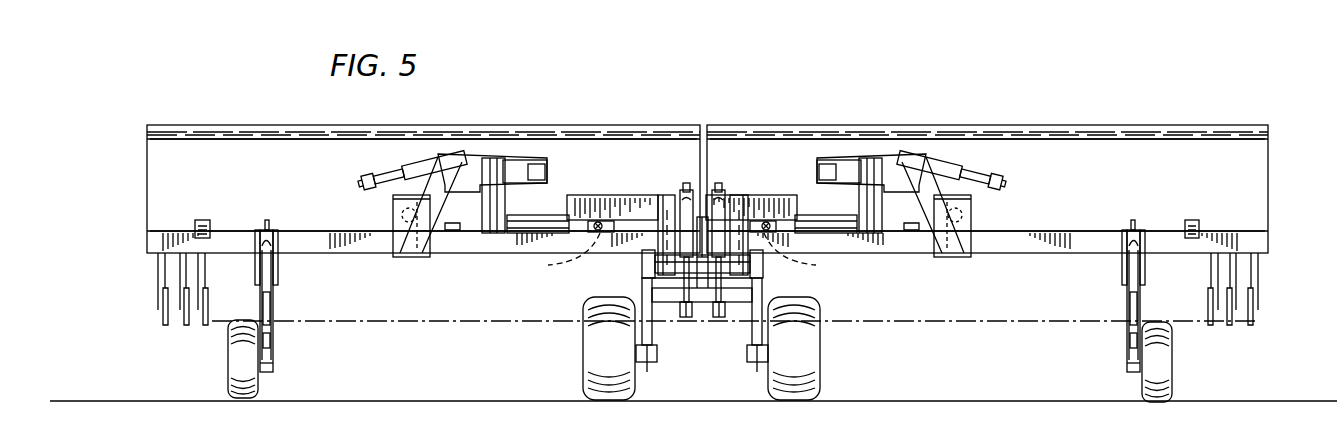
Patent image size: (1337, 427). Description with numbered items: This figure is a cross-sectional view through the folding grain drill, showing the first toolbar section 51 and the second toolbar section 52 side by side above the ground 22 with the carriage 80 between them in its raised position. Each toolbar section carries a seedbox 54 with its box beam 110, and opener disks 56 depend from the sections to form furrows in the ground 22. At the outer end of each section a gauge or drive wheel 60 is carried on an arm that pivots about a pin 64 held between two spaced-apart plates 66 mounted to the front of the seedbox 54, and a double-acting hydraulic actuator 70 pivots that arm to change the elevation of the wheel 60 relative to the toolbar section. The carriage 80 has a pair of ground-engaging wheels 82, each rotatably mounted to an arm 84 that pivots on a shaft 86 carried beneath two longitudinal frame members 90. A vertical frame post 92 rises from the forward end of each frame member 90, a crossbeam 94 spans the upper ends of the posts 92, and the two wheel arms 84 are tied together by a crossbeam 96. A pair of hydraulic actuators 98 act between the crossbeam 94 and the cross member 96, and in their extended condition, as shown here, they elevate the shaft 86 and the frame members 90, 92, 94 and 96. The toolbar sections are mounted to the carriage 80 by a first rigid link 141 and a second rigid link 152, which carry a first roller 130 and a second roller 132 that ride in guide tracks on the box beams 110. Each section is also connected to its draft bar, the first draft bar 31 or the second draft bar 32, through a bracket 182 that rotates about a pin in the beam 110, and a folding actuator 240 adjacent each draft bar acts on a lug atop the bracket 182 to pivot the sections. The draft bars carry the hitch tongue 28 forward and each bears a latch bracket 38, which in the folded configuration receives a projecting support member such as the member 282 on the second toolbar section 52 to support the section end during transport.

The ground 22 is at (1220, 401).
The draft hitch tongue 28 is at (221, 206).
The first draft bar 31 is at (474, 152).
The second draft bar 32 is at (890, 152).
The bracket 38 is at (522, 196).
The first toolbar section 51 is at (140, 172).
The second toolbar section 52 is at (1278, 170).
The seedbox 54 is at (157, 192).
The opener disks 56 is at (198, 324).
The gauge or drive wheel 60 is at (234, 386).
The pin 64 is at (279, 280).
The plates 66 is at (255, 265).
The hydraulic cylinder-piston actuator 70 is at (272, 290).
The carriage 80 is at (666, 310).
The ground-engaging wheels 82 is at (585, 376).
The arm 84 is at (647, 364).
The shaft 86 is at (765, 263).
The longitudinal frame members 90 is at (665, 270).
The vertical frame post 92 is at (667, 205).
The crossbeam 94 is at (690, 193).
The crossbeam 96 is at (738, 305).
The hydraulic cylinder-piston actuators 98 is at (714, 193).
The box beam 110 is at (300, 237).
The first roller 130 is at (598, 235).
The second roller 132 is at (582, 230).
The first rigid link 141 is at (600, 200).
The second rigid link 152 is at (792, 205).
The bracket 182 is at (388, 221).
The hydraulic cylinder-piston actuators 240 is at (405, 170).
The support latch or member 282 is at (1184, 225).